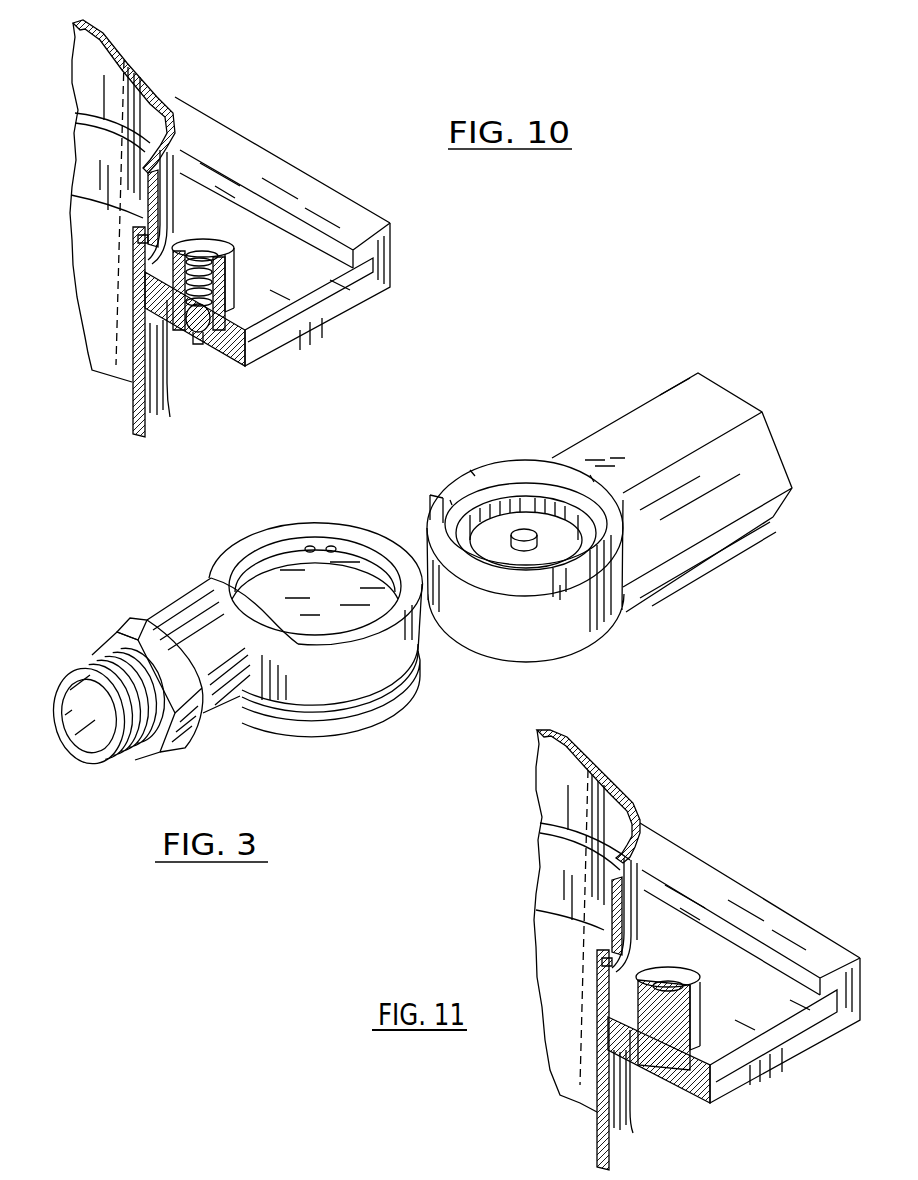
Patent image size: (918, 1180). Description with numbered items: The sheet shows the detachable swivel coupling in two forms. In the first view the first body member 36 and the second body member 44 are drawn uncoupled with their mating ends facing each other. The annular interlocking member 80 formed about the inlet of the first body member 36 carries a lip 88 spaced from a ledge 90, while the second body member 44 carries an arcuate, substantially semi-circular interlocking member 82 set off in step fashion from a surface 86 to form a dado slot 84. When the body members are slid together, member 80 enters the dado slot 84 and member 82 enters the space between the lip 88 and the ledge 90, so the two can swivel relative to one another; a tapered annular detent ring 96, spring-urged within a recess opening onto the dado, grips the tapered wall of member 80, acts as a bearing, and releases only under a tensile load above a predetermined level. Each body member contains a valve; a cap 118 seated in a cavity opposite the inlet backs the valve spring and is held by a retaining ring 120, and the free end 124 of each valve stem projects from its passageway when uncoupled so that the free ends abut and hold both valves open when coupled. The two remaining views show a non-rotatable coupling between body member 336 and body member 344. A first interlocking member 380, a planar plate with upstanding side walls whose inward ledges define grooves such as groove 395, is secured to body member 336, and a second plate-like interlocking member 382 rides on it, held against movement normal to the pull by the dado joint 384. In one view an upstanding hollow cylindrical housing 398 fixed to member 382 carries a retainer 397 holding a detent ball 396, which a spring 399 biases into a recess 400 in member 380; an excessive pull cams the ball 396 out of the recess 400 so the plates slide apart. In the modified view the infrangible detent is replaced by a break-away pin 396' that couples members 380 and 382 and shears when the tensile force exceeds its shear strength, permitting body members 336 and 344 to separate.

In FIG. 3, the first body member 36 is at (203, 569).
In FIG. 3, the second body member 44 is at (490, 452).
In FIG. 3, the interlocking member 80 is at (353, 723).
In FIG. 3, the interlocking member 82 is at (445, 492).
In FIG. 3, the dado slot 84 is at (430, 506).
In FIG. 3, the surface 86 is at (528, 590).
In FIG. 3, the lip 88 is at (412, 680).
In FIG. 3, the ledge 90 is at (320, 707).
In FIG. 3, the annular detent ring 96 is at (427, 543).
In FIG. 3, the cap 118 is at (330, 583).
In FIG. 3, the retaining ring 120 is at (277, 550).
In FIG. 3, the free end 124 is at (523, 530).
In FIG. 10, the body member 336 is at (153, 427).
In FIG. 11, the body member 336 is at (623, 1133).
In FIG. 10, the body member 344 is at (140, 55).
In FIG. 11, the body member 344 is at (615, 778).
In FIG. 10, the first interlocking member 380 is at (317, 322).
In FIG. 11, the first interlocking member 380 is at (777, 1060).
In FIG. 10, the second interlocking member 382 is at (207, 197).
In FIG. 11, the second interlocking member 382 is at (655, 917).
In FIG. 11, the dado joint 384 is at (837, 1013).
In FIG. 10, the groove 395 is at (377, 267).
In FIG. 10, the detent ball 396 is at (206, 335).
In FIG. 11, the break-away pin 396' is at (681, 1041).
In FIG. 10, the retainer 397 is at (237, 300).
In FIG. 10, the upstanding hollow cylindrical housing 398 is at (221, 219).
In FIG. 11, the upstanding hollow cylindrical housing 398 is at (701, 992).
In FIG. 10, the spring 399 is at (227, 277).
In FIG. 10, the recess 400 is at (188, 332).